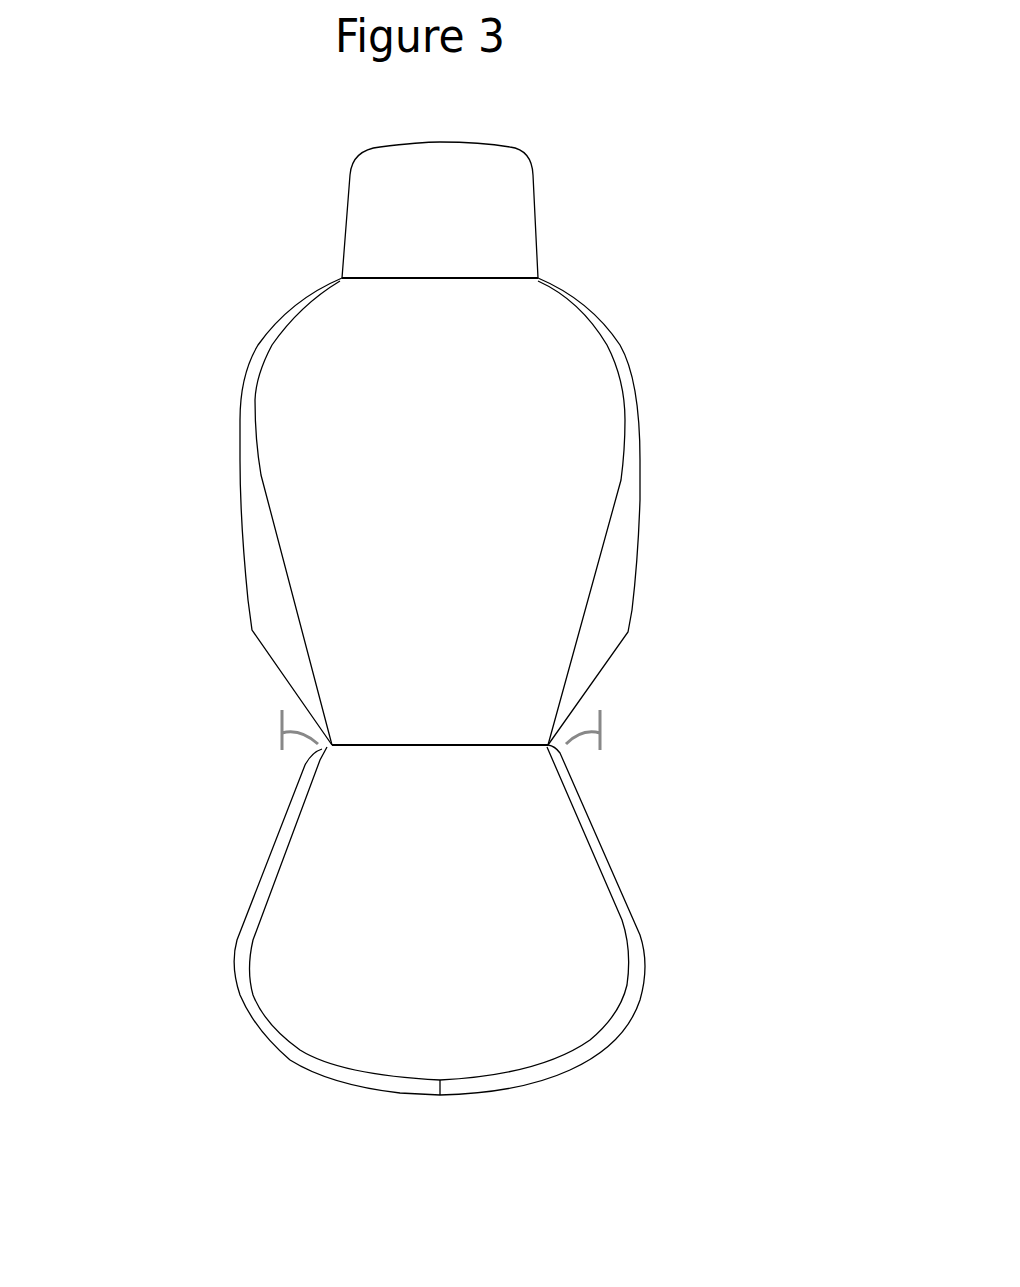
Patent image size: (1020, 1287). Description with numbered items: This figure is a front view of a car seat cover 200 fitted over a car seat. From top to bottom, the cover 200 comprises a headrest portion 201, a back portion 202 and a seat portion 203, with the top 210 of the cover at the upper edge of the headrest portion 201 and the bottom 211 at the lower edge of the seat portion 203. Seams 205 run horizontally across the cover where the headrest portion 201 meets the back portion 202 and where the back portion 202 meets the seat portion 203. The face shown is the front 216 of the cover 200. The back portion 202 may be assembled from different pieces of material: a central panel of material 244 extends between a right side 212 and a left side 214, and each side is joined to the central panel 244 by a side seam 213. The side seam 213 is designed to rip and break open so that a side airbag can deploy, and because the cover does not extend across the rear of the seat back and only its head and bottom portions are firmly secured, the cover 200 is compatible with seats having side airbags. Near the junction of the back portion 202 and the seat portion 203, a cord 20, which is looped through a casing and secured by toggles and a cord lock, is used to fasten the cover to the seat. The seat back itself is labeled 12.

The car seat cover 200 is at (218, 413).
The headrest portion 201 is at (457, 182).
The top 210 is at (425, 148).
The seams 205 is at (420, 283).
The seat back 12 is at (572, 372).
The central panel of material 244 is at (318, 380).
The right side 212 is at (247, 596).
The side seam 213 is at (638, 480).
The left side 214 is at (637, 533).
The front 216 is at (443, 513).
The back portion 202 is at (370, 522).
The cord 20 is at (317, 737).
The seat portion 203 is at (495, 954).
The bottom 211 is at (513, 1092).